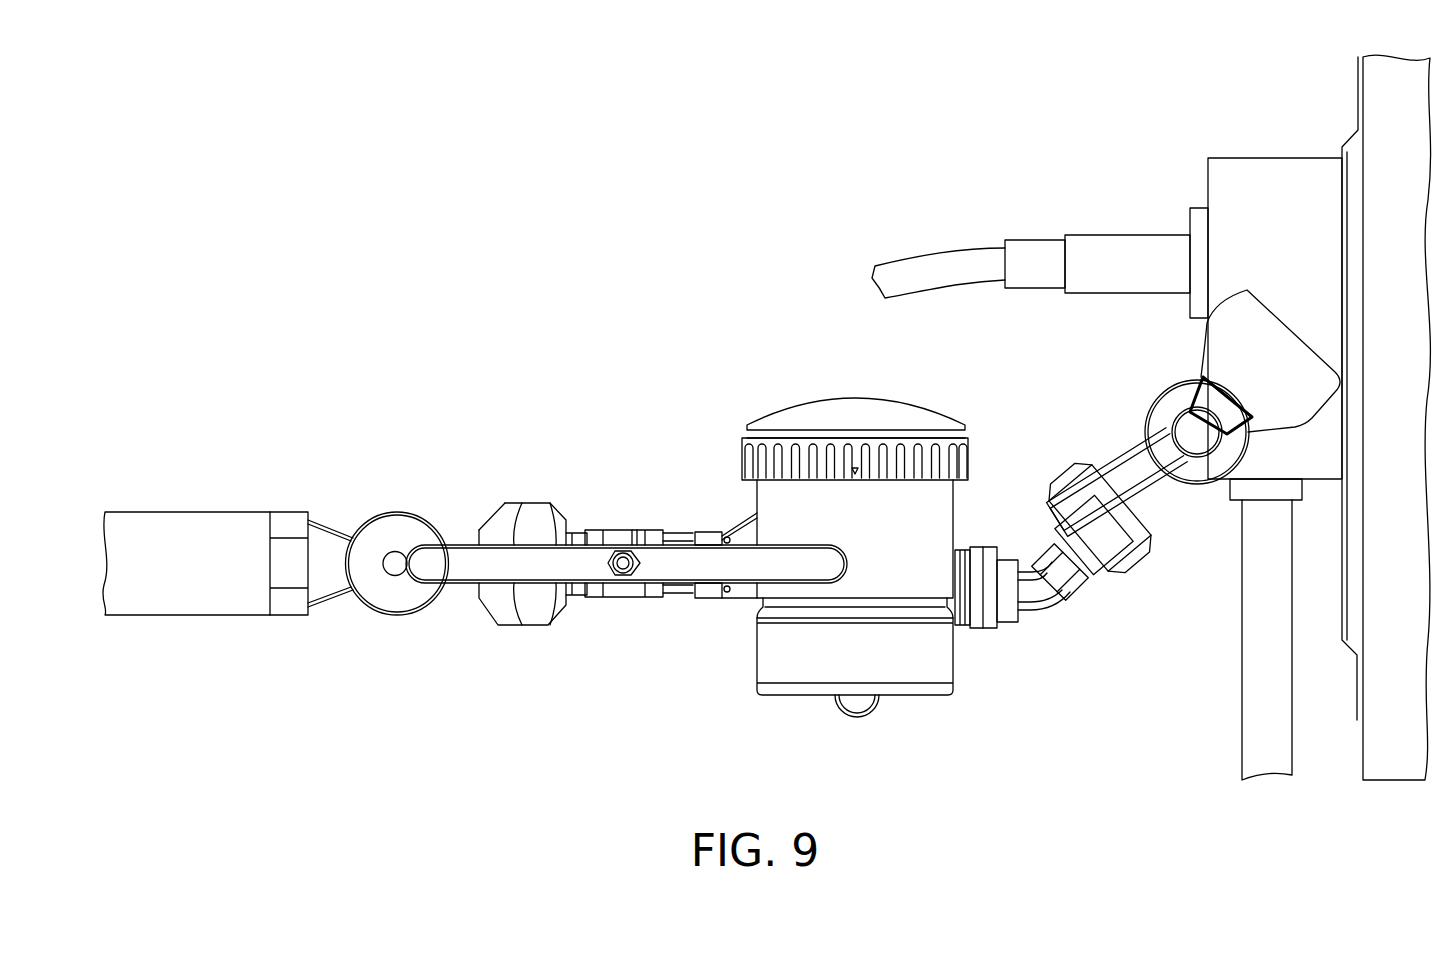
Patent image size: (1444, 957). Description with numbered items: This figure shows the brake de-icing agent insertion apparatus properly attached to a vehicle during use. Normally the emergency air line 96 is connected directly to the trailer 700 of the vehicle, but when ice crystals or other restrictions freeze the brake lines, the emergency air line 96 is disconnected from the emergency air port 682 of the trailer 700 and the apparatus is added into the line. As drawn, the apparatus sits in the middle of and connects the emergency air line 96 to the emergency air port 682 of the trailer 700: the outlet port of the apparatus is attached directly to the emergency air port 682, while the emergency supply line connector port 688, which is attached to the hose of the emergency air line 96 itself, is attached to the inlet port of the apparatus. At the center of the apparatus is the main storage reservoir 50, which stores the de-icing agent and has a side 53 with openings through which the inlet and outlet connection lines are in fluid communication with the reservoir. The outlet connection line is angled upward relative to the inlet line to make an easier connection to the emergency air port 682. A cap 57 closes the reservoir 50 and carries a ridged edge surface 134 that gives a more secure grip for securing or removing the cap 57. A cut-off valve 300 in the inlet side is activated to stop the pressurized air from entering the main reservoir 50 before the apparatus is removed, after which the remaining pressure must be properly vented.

The emergency air line 96 is at (193, 522).
The emergency supply line connector port 688 is at (290, 522).
The cut-off valve 300 is at (708, 568).
The cap 57 is at (800, 405).
The ridged edge surface 134 is at (969, 458).
The side 53 is at (955, 497).
The main storage reservoir 50 is at (957, 528).
The emergency air port 682 is at (1203, 377).
The trailer 700 is at (1380, 92).